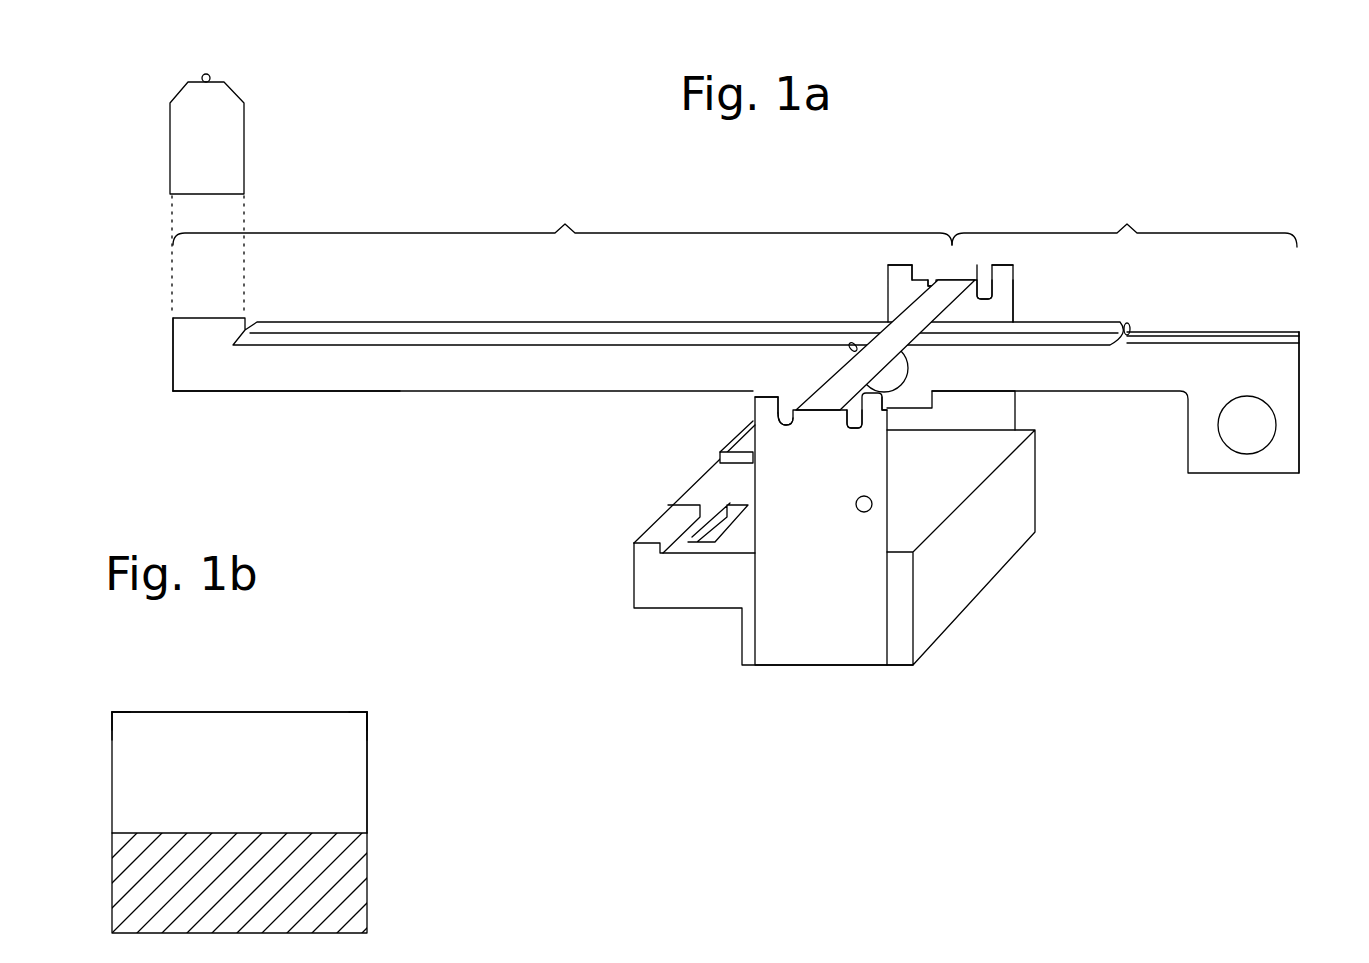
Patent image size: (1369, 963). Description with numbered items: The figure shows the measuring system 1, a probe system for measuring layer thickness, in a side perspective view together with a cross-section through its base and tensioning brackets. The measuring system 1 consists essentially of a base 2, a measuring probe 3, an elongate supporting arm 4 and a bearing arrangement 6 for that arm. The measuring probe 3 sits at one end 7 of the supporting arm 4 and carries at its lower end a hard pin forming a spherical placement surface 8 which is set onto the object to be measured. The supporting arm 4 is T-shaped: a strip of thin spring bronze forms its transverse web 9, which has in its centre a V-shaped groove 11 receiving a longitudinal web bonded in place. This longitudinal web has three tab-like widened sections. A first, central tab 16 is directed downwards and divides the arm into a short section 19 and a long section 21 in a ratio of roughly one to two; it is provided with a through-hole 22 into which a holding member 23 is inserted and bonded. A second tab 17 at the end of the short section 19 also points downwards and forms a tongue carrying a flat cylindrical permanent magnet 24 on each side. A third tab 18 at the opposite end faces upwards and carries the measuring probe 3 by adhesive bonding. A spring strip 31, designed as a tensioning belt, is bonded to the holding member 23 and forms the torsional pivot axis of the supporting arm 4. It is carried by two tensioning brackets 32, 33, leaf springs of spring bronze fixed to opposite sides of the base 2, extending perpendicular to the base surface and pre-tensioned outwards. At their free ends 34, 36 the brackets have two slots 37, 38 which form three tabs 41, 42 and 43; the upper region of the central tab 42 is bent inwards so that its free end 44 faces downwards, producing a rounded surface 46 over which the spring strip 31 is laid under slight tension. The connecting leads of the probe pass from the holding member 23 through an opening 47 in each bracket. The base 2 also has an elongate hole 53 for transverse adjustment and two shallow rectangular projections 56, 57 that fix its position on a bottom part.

In FIG. 1A, the measuring system 1 is at (548, 452).
In FIG. 1A, the base 2 is at (970, 565).
In FIG. 1B, the base 2 is at (345, 888).
In FIG. 1A, the measuring probe 3 is at (244, 145).
In FIG. 1A, the supporting arm 4 is at (408, 404).
In FIG. 1A, the bearing arrangement 6 is at (1001, 226).
In FIG. 1A, the end of the supporting bar 7 is at (173, 372).
In FIG. 1A, the spherical placement surface 8 is at (206, 74).
In FIG. 1A, the transverse web 9 is at (400, 323).
In FIG. 1A, the V-shaped groove 11 is at (1130, 325).
In FIG. 1A, the first tab 16 is at (938, 398).
In FIG. 1A, the second tab 17 is at (1300, 410).
In FIG. 1A, the third tab 18 is at (173, 343).
In FIG. 1A, the short section 19 is at (1127, 226).
In FIG. 1A, the long section 21 is at (565, 226).
In FIG. 1A, the through-hole 22 is at (853, 348).
In FIG. 1A, the holding member 23 is at (910, 372).
In FIG. 1A, the permanent magnet 24 is at (1243, 440).
In FIG. 1A, the spring strip 31 is at (920, 310).
In FIG. 1B, the spring strip 31 is at (247, 712).
In FIG. 1A, the tensioning bracket 32 is at (787, 628).
In FIG. 1B, the tensioning bracket 32 is at (112, 787).
In FIG. 1A, the tensioning bracket 33 is at (1015, 300).
In FIG. 1B, the tensioning bracket 33 is at (367, 808).
In FIG. 1B, the free end 34 is at (115, 710).
In FIG. 1B, the free end 36 is at (363, 710).
In FIG. 1A, the slot 37 is at (920, 276).
In FIG. 1A, the slot 38 is at (983, 273).
In FIG. 1A, the tab 41 is at (897, 263).
In FIG. 1A, the central tab 42 is at (930, 278).
In FIG. 1A, the tab 43 is at (1015, 265).
In FIG. 1B, the free end of the central tab 44 is at (115, 716).
In FIG. 1B, the rounded surface 46 is at (115, 716).
In FIG. 1A, the opening 47 is at (866, 513).
In FIG. 1A, the elongate hole 53 is at (720, 520).
In FIG. 1A, the projection 56 is at (744, 534).
In FIG. 1A, the projection 57 is at (740, 432).